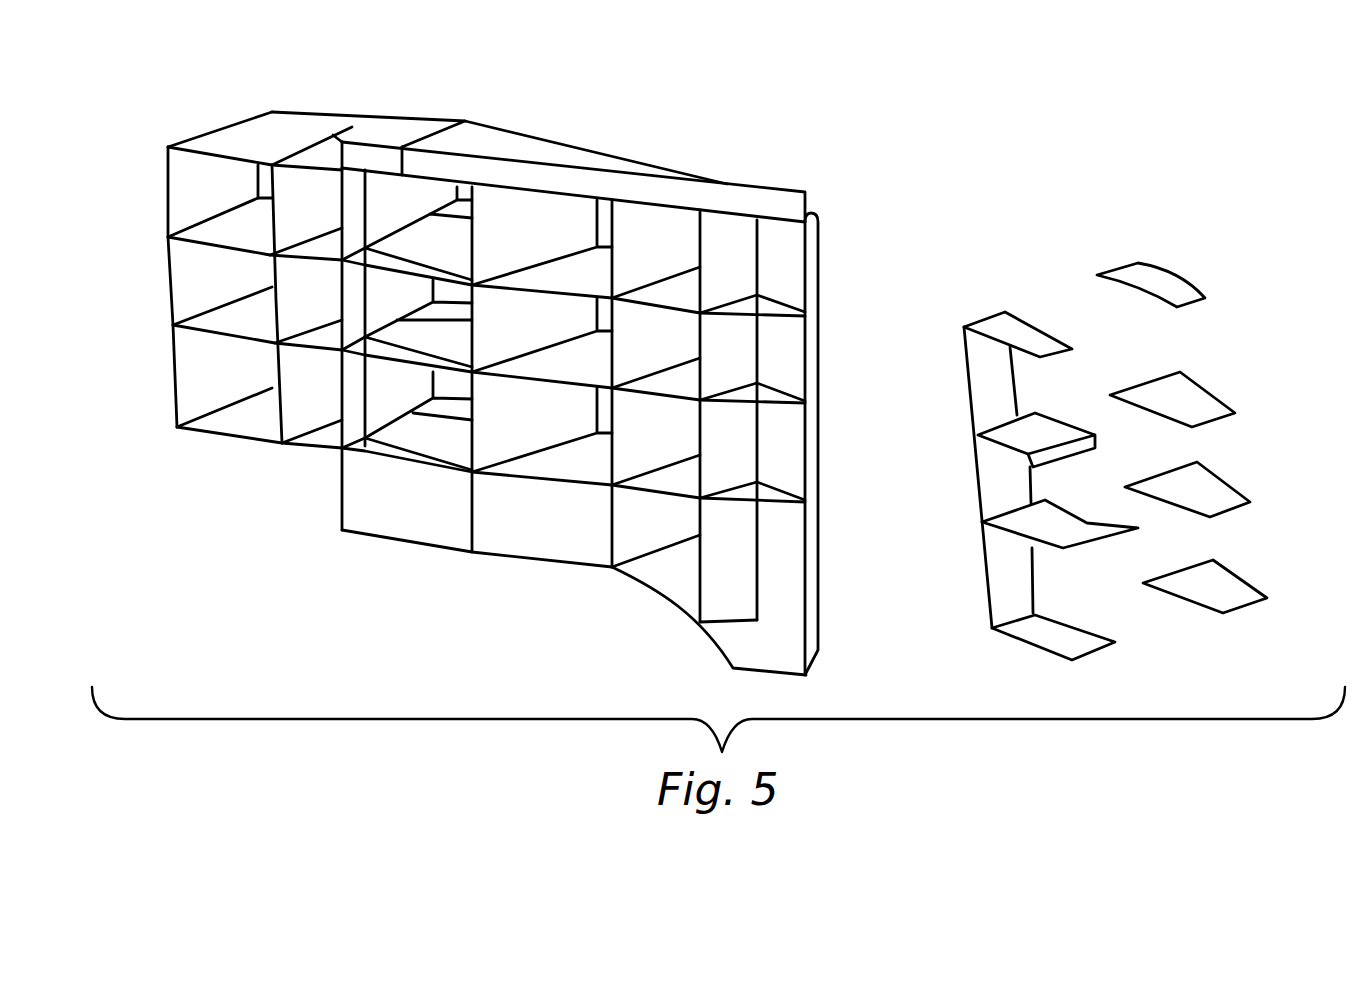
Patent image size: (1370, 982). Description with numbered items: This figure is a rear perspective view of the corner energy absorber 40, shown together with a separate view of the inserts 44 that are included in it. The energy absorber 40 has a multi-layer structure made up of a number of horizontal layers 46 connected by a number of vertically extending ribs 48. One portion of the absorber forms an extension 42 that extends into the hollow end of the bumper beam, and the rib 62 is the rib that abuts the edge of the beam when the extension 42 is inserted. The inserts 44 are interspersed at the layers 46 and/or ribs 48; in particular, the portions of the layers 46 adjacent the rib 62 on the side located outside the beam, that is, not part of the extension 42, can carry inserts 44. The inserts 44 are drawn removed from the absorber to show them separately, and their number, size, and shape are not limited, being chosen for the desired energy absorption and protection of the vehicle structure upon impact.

The corner energy absorber 40 is at (758, 152).
The extension 42 is at (250, 133).
The inserts 44 is at (427, 355).
The horizontal layers 46 is at (237, 317).
The vertically extending ribs 48 is at (518, 228).
The rib 62 is at (355, 323).